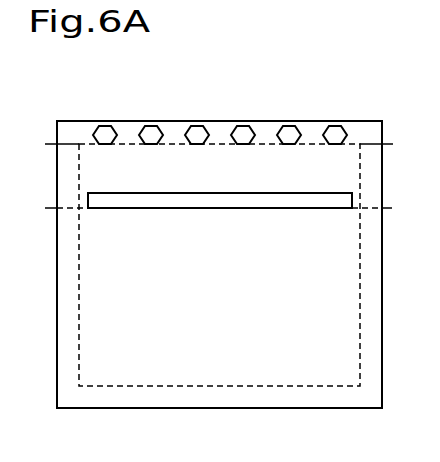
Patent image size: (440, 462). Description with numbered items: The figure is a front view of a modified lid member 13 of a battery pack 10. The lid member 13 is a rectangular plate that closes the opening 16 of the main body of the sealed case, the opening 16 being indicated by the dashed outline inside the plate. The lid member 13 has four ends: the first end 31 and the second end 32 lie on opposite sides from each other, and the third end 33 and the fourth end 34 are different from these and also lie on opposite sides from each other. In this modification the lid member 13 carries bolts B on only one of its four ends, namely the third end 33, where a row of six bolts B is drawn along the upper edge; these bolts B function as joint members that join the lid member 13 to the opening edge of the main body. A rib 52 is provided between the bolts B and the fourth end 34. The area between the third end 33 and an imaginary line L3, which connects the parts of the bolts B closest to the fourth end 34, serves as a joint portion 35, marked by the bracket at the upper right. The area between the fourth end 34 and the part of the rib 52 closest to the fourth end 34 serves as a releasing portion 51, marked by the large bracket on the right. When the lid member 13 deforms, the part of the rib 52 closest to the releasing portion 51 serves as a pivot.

The battery pack 10 is at (374, 83).
The lid member 13 is at (67, 347).
The opening 16 is at (80, 301).
The first end 31 is at (56, 176).
The second end 32 is at (383, 178).
The third end 33 is at (127, 121).
The fourth end 34 is at (134, 408).
The joint portion 35 is at (383, 121).
The releasing portion 51 is at (382, 208).
The rib 52 is at (290, 208).
The bolts B is at (333, 121).
The imaginary line L3 is at (223, 144).